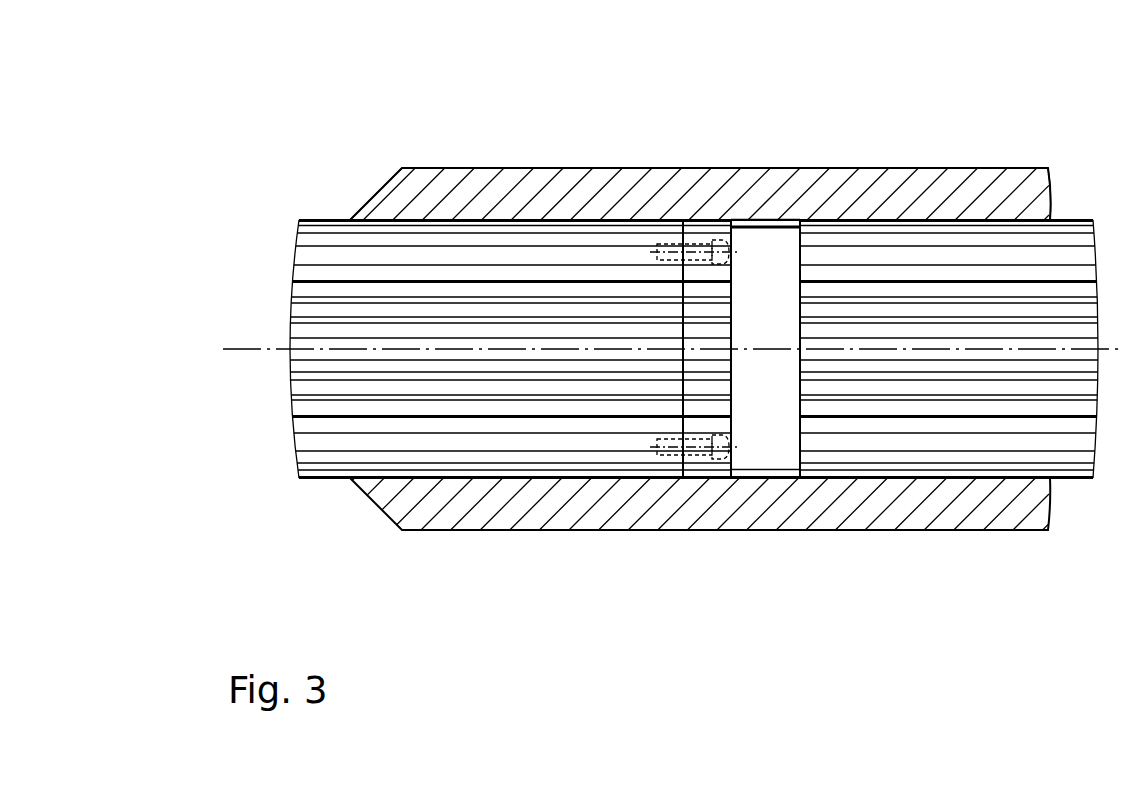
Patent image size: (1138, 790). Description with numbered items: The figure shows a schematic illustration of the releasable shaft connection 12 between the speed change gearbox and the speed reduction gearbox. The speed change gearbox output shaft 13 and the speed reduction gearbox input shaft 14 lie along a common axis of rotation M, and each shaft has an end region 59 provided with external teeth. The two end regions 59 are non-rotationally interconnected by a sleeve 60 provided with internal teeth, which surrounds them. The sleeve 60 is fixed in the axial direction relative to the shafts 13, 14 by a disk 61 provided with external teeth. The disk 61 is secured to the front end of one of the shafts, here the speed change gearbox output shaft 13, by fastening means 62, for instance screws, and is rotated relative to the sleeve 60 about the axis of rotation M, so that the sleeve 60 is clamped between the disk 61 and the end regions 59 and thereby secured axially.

The axis of rotation M is at (285, 348).
The shaft connection 12 is at (561, 137).
The speed change gearbox output shaft 13 is at (344, 210).
The speed reduction gearbox input shaft 14 is at (1067, 208).
The end region 59 is at (473, 445).
The sleeve 60 is at (740, 183).
The disk 61 is at (713, 468).
The fastening means 62 is at (672, 453).